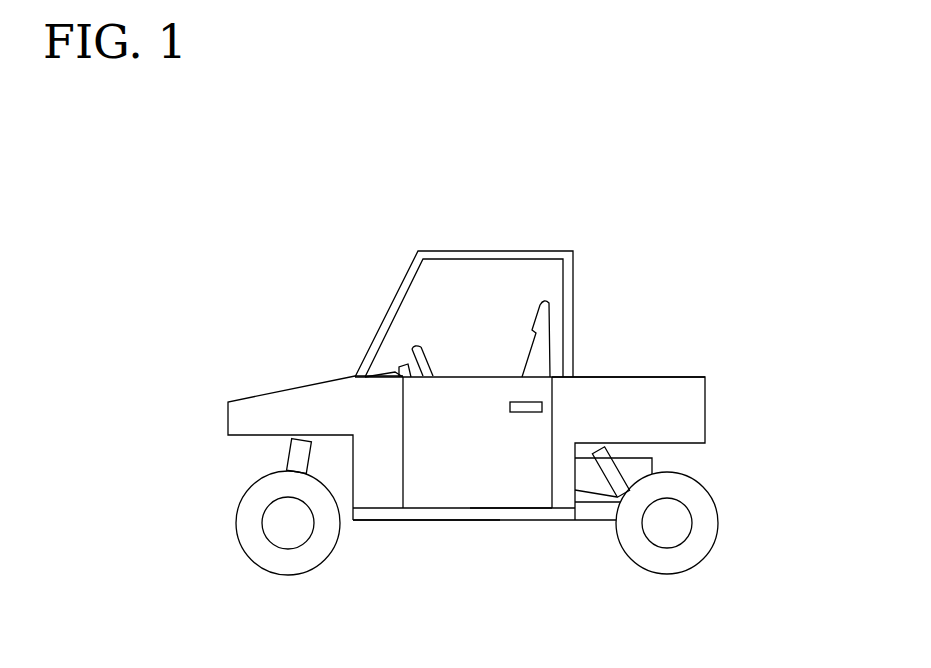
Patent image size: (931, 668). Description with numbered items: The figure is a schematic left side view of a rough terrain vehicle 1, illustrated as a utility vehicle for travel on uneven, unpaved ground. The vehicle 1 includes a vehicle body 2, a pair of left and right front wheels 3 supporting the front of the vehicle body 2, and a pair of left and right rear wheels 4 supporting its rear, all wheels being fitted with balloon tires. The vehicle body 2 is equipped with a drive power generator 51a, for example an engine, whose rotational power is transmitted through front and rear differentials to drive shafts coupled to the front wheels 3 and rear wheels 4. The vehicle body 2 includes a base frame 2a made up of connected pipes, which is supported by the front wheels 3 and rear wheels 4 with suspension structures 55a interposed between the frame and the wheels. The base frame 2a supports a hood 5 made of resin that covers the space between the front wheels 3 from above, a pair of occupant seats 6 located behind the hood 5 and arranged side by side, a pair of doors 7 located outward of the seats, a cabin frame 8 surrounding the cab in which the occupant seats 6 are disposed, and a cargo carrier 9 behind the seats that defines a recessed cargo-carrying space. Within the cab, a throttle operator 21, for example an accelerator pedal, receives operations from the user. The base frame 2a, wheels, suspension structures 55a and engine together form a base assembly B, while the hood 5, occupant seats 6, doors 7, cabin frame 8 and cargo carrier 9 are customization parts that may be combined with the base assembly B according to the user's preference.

The rough terrain vehicle 1 is at (322, 282).
The vehicle body 2 is at (462, 522).
The base frame 2a is at (422, 521).
The front wheels 3 is at (236, 513).
The rear wheels 4 is at (718, 513).
The hood 5 is at (282, 388).
The occupant seats 6 is at (526, 340).
The doors 7 is at (468, 458).
The cabin frame 8 is at (545, 254).
The cargo carrier 9 is at (672, 377).
The throttle operator 21 is at (424, 350).
The drive power generator 51a is at (591, 487).
The suspension structures 55a is at (288, 455).
The base assembly B is at (507, 522).